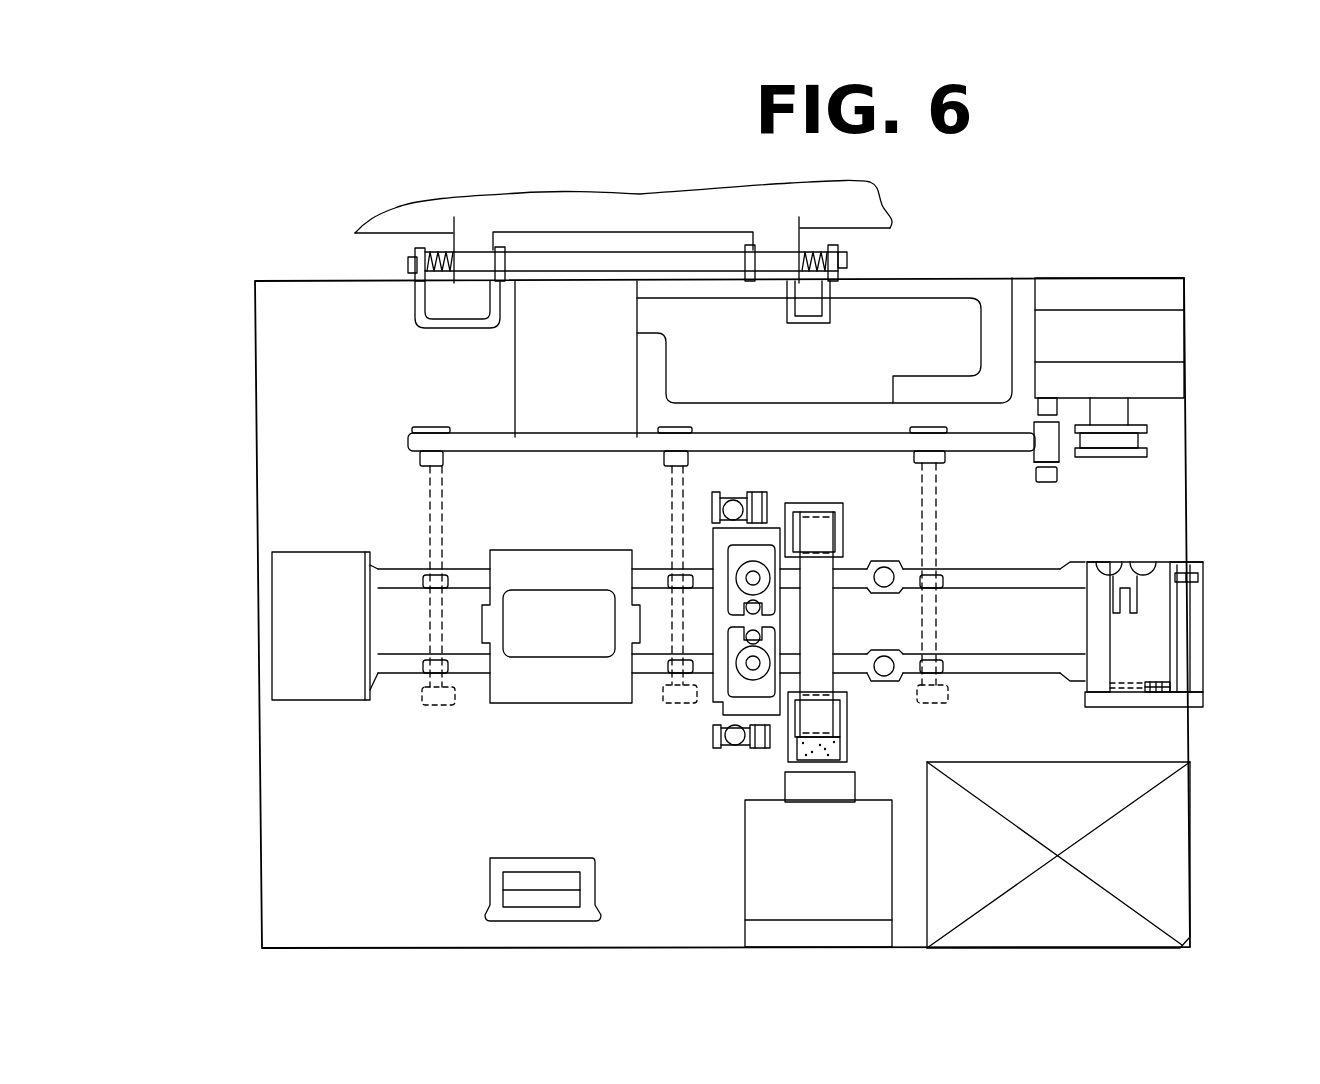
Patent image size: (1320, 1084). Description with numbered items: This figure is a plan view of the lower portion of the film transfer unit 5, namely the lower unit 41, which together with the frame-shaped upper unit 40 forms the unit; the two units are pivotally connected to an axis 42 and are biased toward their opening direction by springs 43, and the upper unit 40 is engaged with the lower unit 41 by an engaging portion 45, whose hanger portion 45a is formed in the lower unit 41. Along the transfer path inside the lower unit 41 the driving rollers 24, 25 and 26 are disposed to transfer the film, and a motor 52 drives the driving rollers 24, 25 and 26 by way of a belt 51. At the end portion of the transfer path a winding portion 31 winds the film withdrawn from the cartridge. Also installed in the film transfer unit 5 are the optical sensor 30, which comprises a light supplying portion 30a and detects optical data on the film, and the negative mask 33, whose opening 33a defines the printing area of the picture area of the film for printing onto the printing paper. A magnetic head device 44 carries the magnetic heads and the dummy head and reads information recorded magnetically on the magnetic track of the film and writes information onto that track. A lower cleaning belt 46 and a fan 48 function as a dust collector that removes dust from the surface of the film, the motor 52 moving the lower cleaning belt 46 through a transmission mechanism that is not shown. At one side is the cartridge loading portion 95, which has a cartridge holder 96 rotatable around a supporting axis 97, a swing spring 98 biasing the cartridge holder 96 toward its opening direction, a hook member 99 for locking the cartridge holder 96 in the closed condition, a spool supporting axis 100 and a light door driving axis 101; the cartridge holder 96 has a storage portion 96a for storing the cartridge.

The film transfer unit 5 is at (1197, 235).
The driving roller 24 is at (424, 580).
The driving roller 25 is at (666, 577).
The driving roller 26 is at (943, 580).
The optical sensor 30 is at (908, 627).
The light supplying portion 30a is at (884, 566).
The winding portion 31 is at (312, 562).
The negative mask 33 is at (520, 697).
The opening 33a is at (551, 605).
The upper unit 40 is at (360, 217).
The lower unit 41 is at (246, 397).
The axis 42 is at (566, 262).
The spring 43 is at (454, 283).
The magnetic head device 44 is at (712, 705).
The engaging portion 45 is at (490, 889).
The hanger portion 45a is at (510, 880).
The lower cleaning belt 46 is at (820, 626).
The fan 48 is at (750, 877).
The belt 51 is at (483, 437).
The motor 52 is at (1172, 342).
The cartridge loading portion 95 is at (1213, 635).
The cartridge holder 96 is at (1100, 632).
The storage portion 96a is at (1123, 660).
The supporting axis 97 is at (1167, 693).
The swing spring 98 is at (1168, 683).
The hook member 99 is at (1203, 576).
The spool supporting axis 100 is at (1167, 562).
The light door driving axis 101 is at (1097, 562).